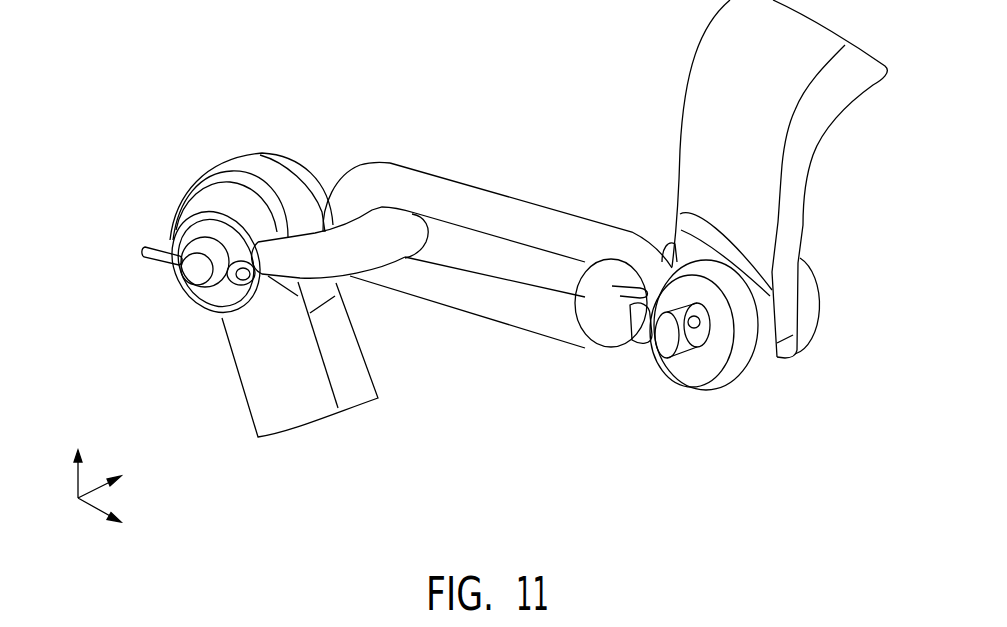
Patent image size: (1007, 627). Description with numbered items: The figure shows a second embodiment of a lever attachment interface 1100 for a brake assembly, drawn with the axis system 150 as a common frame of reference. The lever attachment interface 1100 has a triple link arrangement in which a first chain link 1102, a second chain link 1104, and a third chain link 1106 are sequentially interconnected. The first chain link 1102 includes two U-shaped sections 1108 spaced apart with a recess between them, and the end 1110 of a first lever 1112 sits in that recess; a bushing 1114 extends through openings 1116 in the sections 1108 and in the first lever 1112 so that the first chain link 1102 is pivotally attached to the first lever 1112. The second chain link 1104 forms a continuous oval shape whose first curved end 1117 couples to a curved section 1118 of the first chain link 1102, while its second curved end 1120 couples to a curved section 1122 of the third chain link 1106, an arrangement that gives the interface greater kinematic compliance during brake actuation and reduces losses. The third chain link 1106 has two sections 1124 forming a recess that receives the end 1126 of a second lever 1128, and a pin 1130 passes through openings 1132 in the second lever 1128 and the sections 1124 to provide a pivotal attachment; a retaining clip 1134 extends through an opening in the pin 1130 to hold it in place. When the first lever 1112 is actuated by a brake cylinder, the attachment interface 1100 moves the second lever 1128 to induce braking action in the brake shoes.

The axis system 150 is at (119, 440).
The lever attachment interface 1100 is at (692, 468).
The first chain link 1102 is at (610, 317).
The second chain link 1104 is at (492, 208).
The third chain link 1106 is at (335, 266).
The sections 1108 is at (808, 296).
The end 1110 is at (780, 354).
The first lever 1112 is at (740, 222).
The bushing 1114 is at (673, 358).
The openings 1116 is at (673, 262).
The first curved end 1117 is at (630, 364).
The curved section 1118 is at (560, 273).
The second curved end 1120 is at (438, 240).
The curved section 1122 is at (350, 150).
The sections 1124 is at (284, 156).
The end 1126 is at (239, 157).
The second lever 1128 is at (257, 370).
The pin 1130 is at (195, 275).
The openings 1132 is at (262, 248).
The retaining clip 1134 is at (162, 248).